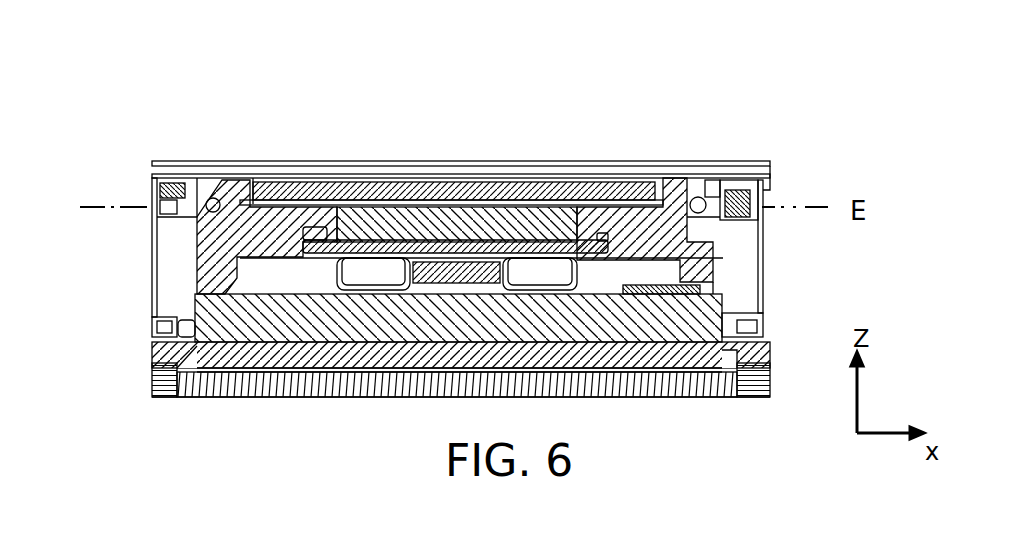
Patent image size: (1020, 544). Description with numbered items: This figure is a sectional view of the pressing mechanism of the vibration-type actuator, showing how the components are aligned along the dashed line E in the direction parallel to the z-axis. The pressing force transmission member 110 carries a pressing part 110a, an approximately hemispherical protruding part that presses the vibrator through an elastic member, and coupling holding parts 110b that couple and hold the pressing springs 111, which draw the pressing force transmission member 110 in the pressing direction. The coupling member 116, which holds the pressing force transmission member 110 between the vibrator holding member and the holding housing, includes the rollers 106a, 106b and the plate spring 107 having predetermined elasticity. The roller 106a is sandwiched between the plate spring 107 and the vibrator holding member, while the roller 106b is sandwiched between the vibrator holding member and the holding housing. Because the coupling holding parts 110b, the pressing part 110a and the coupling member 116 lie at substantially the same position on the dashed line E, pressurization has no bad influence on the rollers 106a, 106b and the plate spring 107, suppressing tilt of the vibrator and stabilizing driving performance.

The roller 106a is at (692, 185).
The roller 106b is at (197, 177).
The plate spring 107 is at (712, 180).
The pressing force transmission member 110 is at (300, 177).
The pressing part 110a is at (378, 207).
The coupling holding parts 110b is at (153, 172).
The pressing springs 111 is at (160, 268).
The coupling member 116 is at (825, 100).